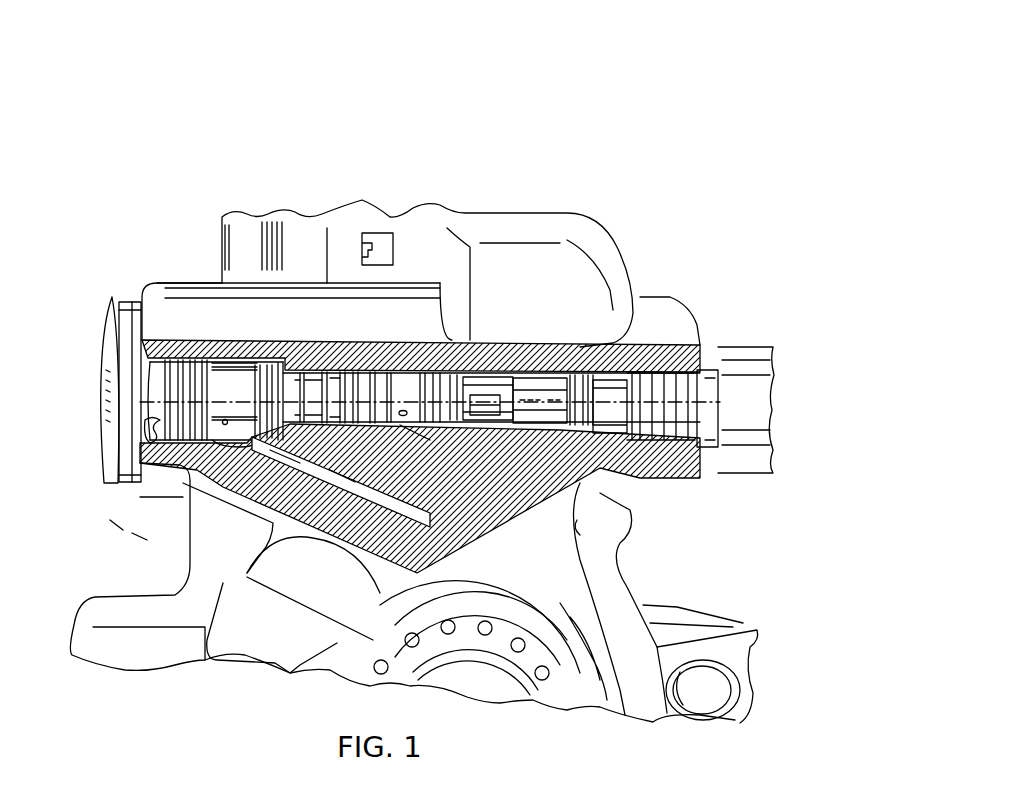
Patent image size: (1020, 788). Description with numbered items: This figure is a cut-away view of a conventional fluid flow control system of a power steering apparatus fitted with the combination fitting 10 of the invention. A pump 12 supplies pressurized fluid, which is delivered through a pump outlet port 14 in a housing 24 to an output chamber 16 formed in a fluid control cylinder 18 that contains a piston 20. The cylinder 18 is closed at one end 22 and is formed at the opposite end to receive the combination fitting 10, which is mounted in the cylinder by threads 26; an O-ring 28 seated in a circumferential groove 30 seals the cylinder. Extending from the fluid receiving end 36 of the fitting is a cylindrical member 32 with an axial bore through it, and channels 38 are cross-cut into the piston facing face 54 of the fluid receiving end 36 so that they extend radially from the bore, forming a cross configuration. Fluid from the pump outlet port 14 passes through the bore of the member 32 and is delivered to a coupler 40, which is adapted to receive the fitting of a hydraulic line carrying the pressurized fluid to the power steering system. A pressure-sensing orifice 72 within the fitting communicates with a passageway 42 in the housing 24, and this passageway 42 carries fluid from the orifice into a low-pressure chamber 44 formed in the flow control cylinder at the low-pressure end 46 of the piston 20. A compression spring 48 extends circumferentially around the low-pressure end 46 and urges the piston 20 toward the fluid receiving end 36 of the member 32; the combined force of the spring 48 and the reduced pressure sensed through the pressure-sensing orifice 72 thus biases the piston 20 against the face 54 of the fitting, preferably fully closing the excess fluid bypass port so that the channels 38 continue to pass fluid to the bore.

The combination fitting 10 is at (700, 367).
The pump 12 is at (643, 590).
The pump outlet port 14 is at (497, 413).
The output chamber 16 is at (470, 400).
The fluid control cylinder 18 is at (220, 358).
The piston 20 is at (410, 390).
The closed end of the cylinder 22 is at (140, 410).
The housing 24 is at (620, 642).
The threads 26 is at (668, 378).
The O-ring 28 is at (577, 380).
The circumferential groove 30 is at (580, 378).
The cylindrical member 32 is at (533, 390).
The fluid receiving end 36 is at (425, 440).
The channels 38 is at (490, 440).
The coupler 40 is at (737, 400).
The passageway 42 is at (340, 455).
The low-pressure chamber 44 is at (252, 437).
The low-pressure end of the piston 46 is at (292, 390).
The compression spring 48 is at (288, 447).
The piston facing face 54 is at (443, 412).
The pressure-sensing orifice 72 is at (616, 444).